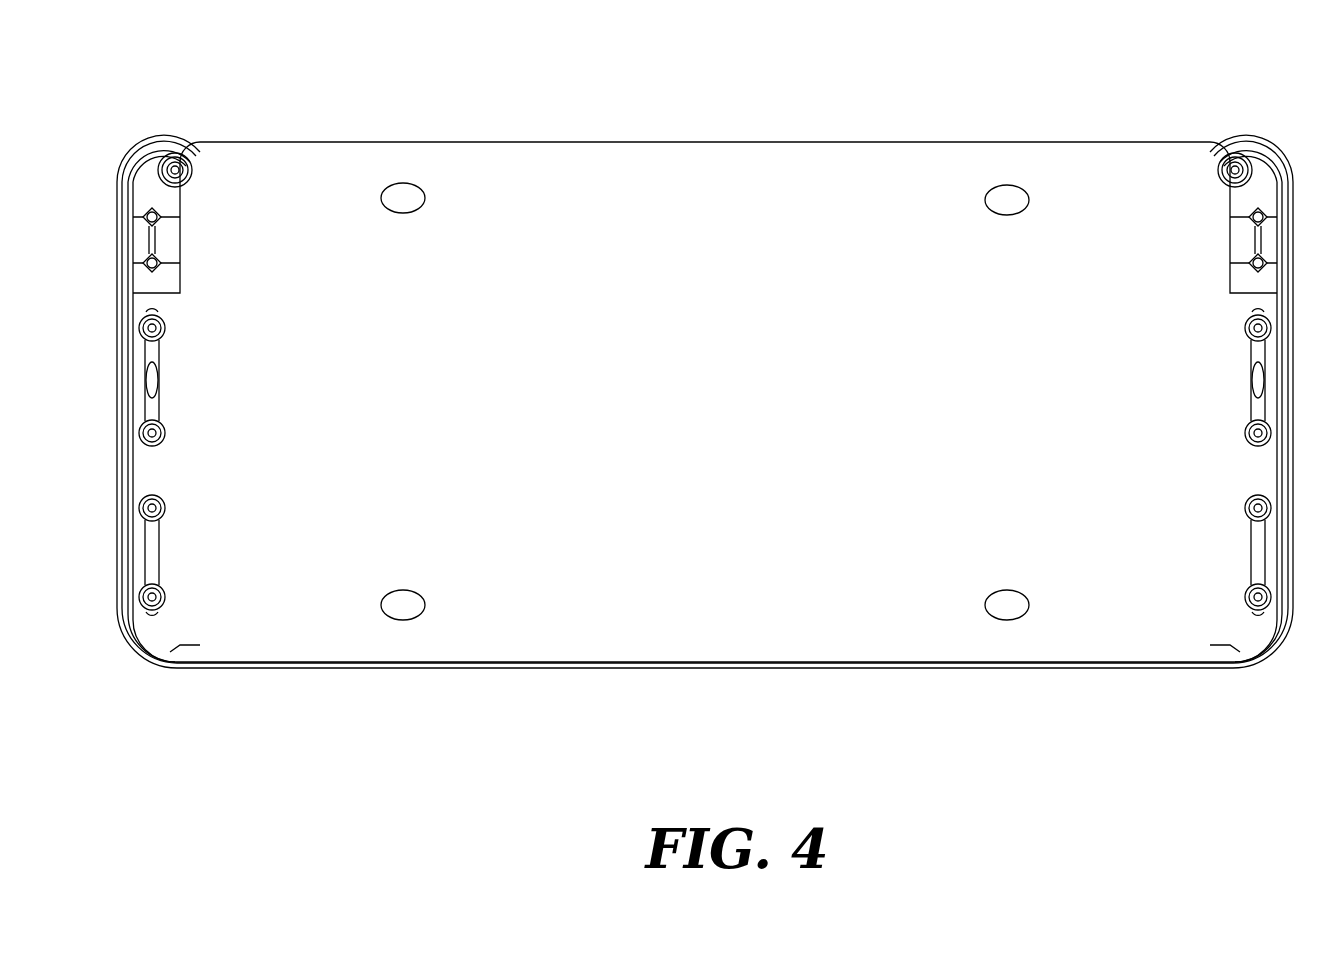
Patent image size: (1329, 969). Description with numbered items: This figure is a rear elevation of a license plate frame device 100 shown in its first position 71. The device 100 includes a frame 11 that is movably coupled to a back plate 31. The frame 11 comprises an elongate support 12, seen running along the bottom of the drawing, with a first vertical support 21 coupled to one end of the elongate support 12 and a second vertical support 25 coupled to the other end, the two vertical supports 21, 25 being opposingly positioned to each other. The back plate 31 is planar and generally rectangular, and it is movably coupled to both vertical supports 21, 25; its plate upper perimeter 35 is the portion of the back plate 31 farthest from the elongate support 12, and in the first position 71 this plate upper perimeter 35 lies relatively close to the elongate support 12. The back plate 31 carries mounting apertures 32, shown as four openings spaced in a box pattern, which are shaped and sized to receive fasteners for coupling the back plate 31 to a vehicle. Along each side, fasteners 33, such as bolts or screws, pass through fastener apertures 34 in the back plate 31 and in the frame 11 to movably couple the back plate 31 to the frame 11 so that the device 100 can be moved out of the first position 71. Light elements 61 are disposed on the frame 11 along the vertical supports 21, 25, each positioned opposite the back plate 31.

The license plate frame device 100 is at (1115, 84).
The frame 11 is at (178, 655).
The elongate support 12 is at (625, 665).
The first vertical support 21 is at (1242, 158).
The second vertical support 25 is at (165, 158).
The back plate 31 is at (704, 255).
The mounting aperture 32 is at (382, 201).
The fastener 33 is at (165, 326).
The fastener aperture 34 is at (160, 398).
The plate upper perimeter 35 is at (520, 142).
The light element 61 is at (124, 186).
The first position 71 is at (808, 135).